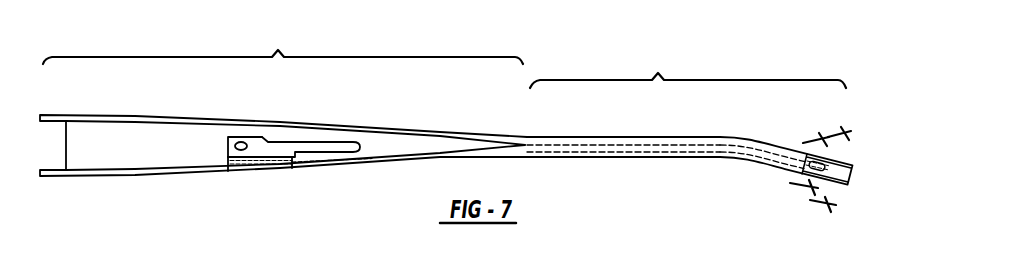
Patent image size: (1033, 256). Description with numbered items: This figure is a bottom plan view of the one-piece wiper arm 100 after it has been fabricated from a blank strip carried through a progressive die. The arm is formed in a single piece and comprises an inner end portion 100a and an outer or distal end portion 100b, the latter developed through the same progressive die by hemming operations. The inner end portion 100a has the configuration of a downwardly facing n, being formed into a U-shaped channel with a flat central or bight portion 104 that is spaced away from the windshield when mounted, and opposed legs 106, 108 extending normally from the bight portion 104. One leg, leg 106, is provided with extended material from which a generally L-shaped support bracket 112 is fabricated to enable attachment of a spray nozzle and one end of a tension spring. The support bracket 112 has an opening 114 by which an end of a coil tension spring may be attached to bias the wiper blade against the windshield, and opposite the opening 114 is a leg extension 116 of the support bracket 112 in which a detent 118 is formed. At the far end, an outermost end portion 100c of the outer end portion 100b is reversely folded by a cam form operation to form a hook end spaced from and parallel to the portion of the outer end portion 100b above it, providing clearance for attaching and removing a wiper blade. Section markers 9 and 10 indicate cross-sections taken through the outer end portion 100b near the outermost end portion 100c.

The one-piece wiper arm 100 is at (560, 56).
The inner end portion 100a is at (283, 45).
The outer end portion 100b is at (690, 116).
The outermost end portion 100c is at (832, 180).
The flat central or bight portion 104 is at (130, 159).
The leg 106 is at (98, 176).
The leg 108 is at (98, 115).
The support bracket 112 is at (228, 146).
The opening 114 is at (241, 150).
The leg extension 116 is at (303, 141).
The detent 118 is at (337, 146).
The section line 9- 9 is at (822, 166).
The section line 10- 10 is at (796, 158).